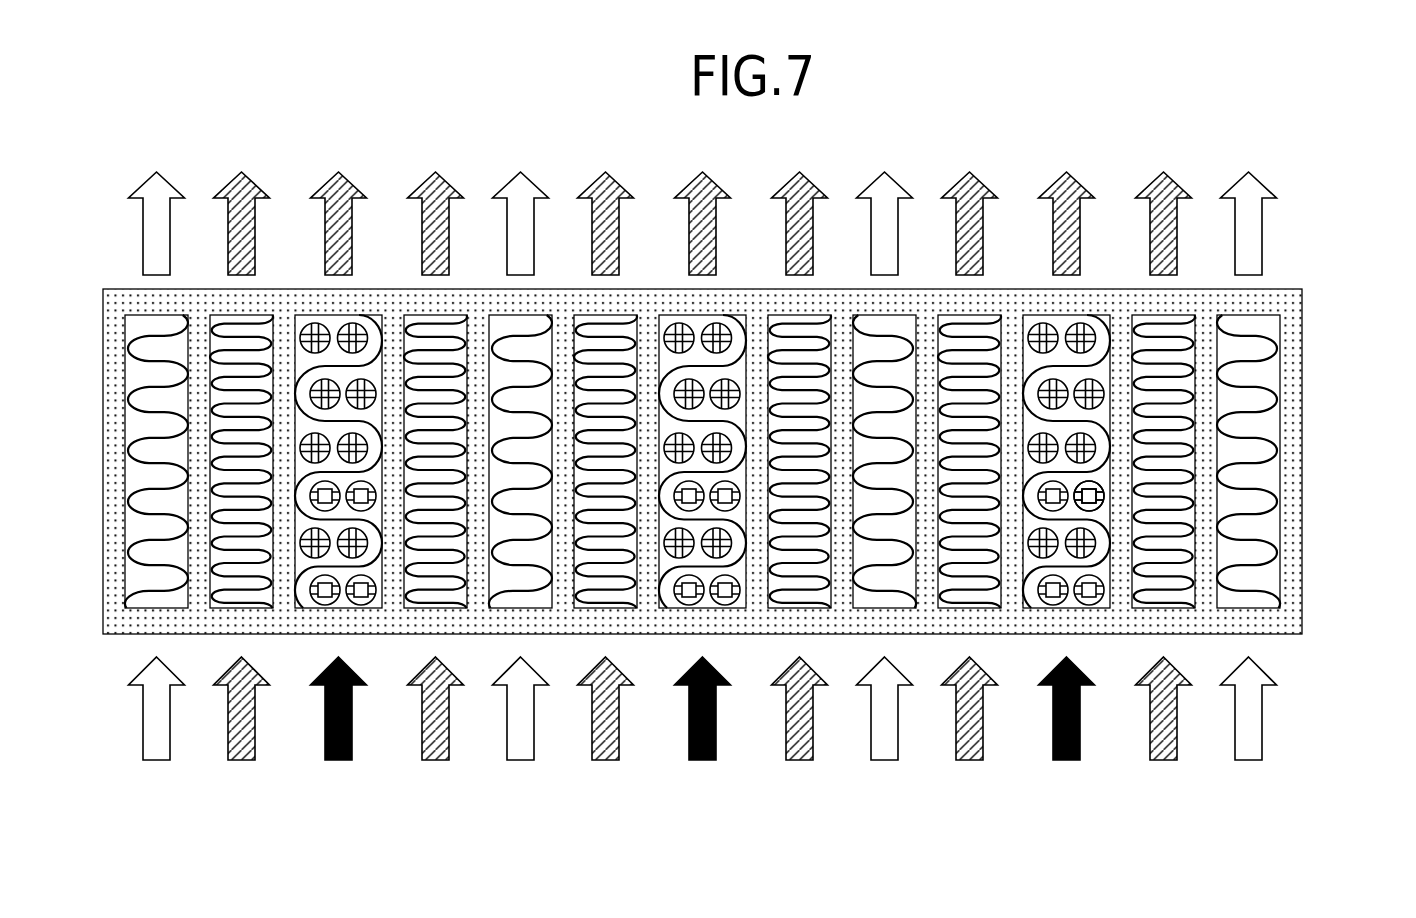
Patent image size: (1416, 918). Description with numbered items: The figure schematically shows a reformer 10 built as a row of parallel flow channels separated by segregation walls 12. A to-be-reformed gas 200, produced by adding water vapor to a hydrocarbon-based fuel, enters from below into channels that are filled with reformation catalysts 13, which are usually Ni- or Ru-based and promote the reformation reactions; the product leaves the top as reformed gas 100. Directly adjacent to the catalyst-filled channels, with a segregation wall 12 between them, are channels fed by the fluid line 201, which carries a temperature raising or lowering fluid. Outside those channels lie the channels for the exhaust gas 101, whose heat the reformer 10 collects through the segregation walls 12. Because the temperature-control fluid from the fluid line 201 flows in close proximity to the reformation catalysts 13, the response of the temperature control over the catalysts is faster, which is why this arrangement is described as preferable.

The reformer 10 is at (751, 443).
The segregation wall 12 is at (1120, 425).
The reformation catalyst 13 is at (1103, 494).
The reformed gas 100 is at (1079, 183).
The exhaust gas 101 is at (886, 762).
The to-be-reformed gas 200 is at (1067, 762).
The fluid line 201 is at (803, 762).